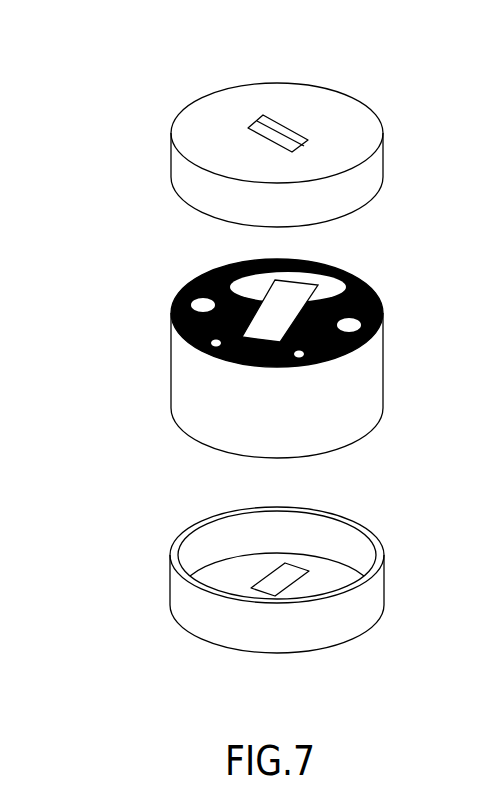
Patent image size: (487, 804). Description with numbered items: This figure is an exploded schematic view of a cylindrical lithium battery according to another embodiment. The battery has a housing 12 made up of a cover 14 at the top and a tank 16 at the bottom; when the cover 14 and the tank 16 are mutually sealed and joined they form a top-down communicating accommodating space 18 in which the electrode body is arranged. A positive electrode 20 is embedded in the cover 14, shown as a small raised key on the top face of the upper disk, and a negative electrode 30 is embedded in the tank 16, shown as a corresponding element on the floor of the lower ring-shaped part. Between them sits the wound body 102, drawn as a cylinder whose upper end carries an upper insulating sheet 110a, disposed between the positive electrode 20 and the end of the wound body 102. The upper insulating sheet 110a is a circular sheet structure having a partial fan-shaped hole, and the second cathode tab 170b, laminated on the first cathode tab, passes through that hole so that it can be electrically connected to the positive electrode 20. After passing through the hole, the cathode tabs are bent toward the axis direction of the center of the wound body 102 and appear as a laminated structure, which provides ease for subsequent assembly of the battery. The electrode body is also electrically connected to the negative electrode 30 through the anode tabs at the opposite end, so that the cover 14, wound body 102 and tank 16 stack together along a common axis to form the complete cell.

The housing 12 is at (251, 134).
The cover 14 is at (352, 135).
The positive electrode 20 is at (288, 138).
The wound body 102 is at (256, 343).
The upper insulating sheet 110a is at (367, 342).
The second cathode tab 170b is at (282, 303).
The accommodating space 18 is at (259, 585).
The tank 16 is at (343, 618).
The negative electrode 30 is at (267, 590).